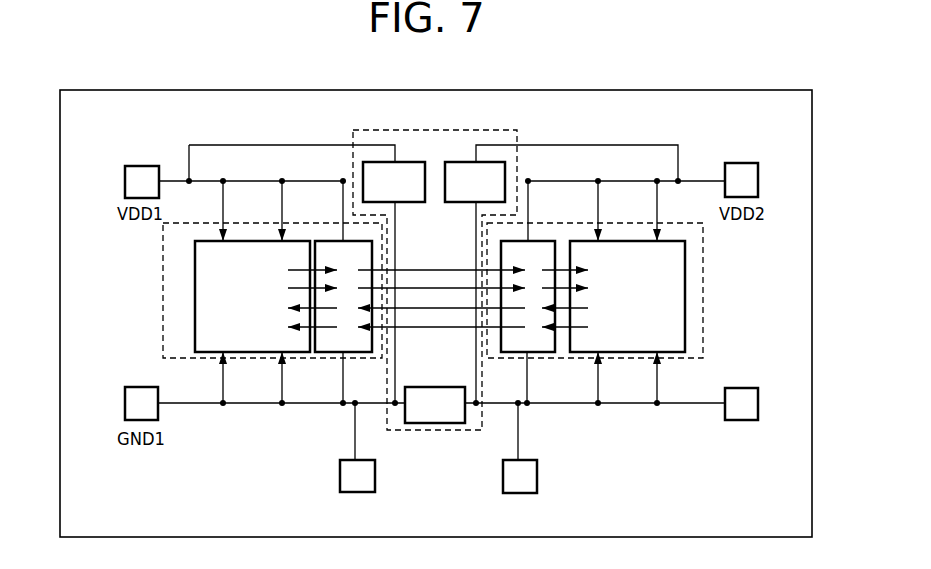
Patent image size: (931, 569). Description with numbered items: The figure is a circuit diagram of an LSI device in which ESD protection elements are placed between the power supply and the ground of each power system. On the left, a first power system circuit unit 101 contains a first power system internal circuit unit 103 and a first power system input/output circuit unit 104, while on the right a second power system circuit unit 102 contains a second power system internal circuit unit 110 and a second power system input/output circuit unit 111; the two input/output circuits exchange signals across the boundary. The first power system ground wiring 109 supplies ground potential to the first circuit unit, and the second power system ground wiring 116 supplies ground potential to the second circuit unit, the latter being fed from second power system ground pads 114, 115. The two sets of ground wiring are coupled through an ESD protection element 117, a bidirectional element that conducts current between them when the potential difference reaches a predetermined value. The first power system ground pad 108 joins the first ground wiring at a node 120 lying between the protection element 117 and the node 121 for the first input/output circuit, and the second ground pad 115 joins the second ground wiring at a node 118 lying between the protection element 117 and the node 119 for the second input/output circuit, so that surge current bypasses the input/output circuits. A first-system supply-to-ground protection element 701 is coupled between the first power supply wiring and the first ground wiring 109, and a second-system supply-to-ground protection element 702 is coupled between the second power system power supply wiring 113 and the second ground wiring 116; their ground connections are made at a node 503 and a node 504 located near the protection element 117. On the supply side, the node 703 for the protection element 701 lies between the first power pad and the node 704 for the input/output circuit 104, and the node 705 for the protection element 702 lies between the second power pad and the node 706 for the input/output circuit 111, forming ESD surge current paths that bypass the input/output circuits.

The first power system circuit unit 101 is at (163, 307).
The second power system circuit unit 102 is at (703, 250).
The first power system internal circuit unit 103 is at (195, 265).
The first power system input/output circuit unit 104 is at (322, 241).
The first power system ground pad 108 is at (340, 475).
The first power system ground wiring 109 is at (230, 407).
The second power system internal circuit unit 110 is at (685, 318).
The second power system input/output circuit unit 111 is at (545, 241).
The second power system power supply wiring 113 is at (618, 181).
The second power system ground pad 114 is at (738, 388).
The second power system ground pad 115 is at (537, 473).
The second power system ground wiring 116 is at (243, 181).
The ESD protection element 117 is at (435, 423).
The node 118 is at (518, 405).
The node 119 is at (527, 403).
The node 120 is at (355, 405).
The node 121 is at (340, 400).
The node 503 is at (394, 405).
The node 504 is at (478, 405).
The protection element between VDD1 and GND1 701 is at (408, 162).
The protection element between VDD2 and GND2 702 is at (465, 162).
The node 703 is at (189, 181).
The node 704 is at (343, 181).
The node 705 is at (678, 181).
The node 706 is at (528, 181).